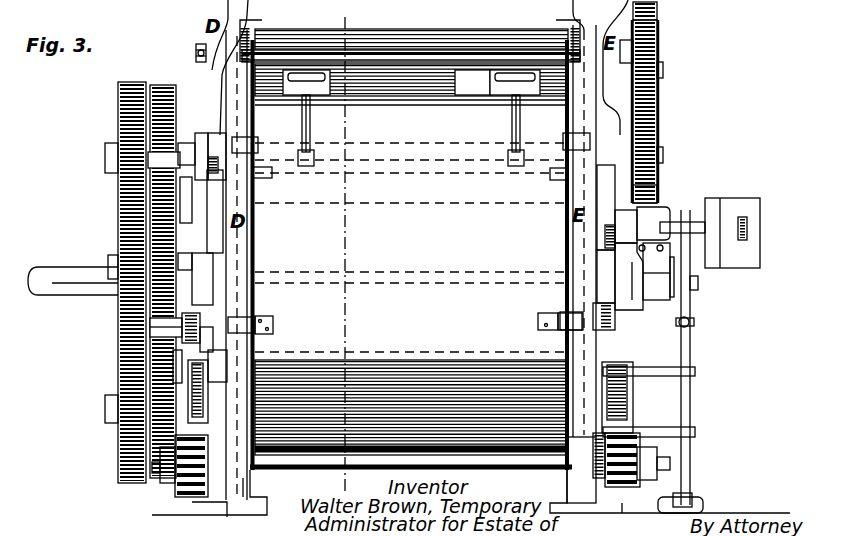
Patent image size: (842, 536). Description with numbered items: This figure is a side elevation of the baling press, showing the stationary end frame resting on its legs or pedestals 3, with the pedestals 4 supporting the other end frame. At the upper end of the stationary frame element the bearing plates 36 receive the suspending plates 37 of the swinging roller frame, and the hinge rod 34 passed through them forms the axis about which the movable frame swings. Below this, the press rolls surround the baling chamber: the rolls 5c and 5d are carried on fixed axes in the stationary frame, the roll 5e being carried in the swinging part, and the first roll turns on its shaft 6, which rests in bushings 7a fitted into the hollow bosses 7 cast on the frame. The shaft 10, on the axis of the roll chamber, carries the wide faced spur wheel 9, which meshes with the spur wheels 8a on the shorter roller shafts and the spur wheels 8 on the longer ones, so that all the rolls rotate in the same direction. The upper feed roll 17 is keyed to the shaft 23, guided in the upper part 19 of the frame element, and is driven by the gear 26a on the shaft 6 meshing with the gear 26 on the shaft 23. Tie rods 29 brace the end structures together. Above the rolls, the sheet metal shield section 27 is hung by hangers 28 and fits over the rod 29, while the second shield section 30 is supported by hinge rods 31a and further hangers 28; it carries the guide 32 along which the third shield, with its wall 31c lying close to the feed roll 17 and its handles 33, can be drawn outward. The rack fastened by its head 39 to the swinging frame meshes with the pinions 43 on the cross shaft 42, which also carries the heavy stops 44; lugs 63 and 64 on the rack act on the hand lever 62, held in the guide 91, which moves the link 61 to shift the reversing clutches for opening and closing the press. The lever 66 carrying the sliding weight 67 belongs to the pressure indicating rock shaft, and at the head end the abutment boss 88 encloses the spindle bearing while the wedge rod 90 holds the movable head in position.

The legs or pedestals 3 is at (566, 482).
The legs or pedestals 4 is at (252, 486).
The roll 5c is at (487, 445).
The roll 5d is at (411, 407).
The roll 5e is at (306, 370).
The shaft 6 is at (373, 16).
The hollow bosses 7 is at (222, 134).
The bushings 7a is at (204, 146).
The spur wheels 8 is at (118, 107).
The spur wheels 8a is at (176, 76).
The wide faced spur wheel 9 is at (118, 240).
The shaft 10 is at (62, 297).
The upper feed roll 17 is at (316, 40).
The upper part of frame element 19 is at (240, 12).
The shaft 23 is at (663, 70).
The gear 26 is at (660, 32).
The gear 26a is at (660, 182).
The shield section 27 is at (411, 255).
The hangers 28 is at (274, 324).
The tie rods 29 is at (327, 170).
The second shield section 30 is at (436, 138).
The hinge rods 31a is at (512, 130).
The plate 31c is at (410, 96).
The guide 32 is at (311, 114).
The handles 33 is at (521, 112).
The hinge rod 34 is at (455, 44).
The bearing plates 36 is at (196, 48).
The suspending plates 37 is at (225, 78).
The head 39 is at (212, 374).
The cross shaft 42 is at (672, 463).
The pinions 43 is at (180, 493).
The stops 44 is at (212, 434).
The link 61 is at (696, 322).
The hand lever 62 is at (692, 353).
The lug 63 is at (697, 372).
The lug 64 is at (697, 432).
The lever 66 is at (690, 222).
The sliding weight 67 is at (740, 200).
The abutment boss 88 is at (657, 292).
The wedge rod 90 is at (644, 331).
The guide 91 is at (700, 284).